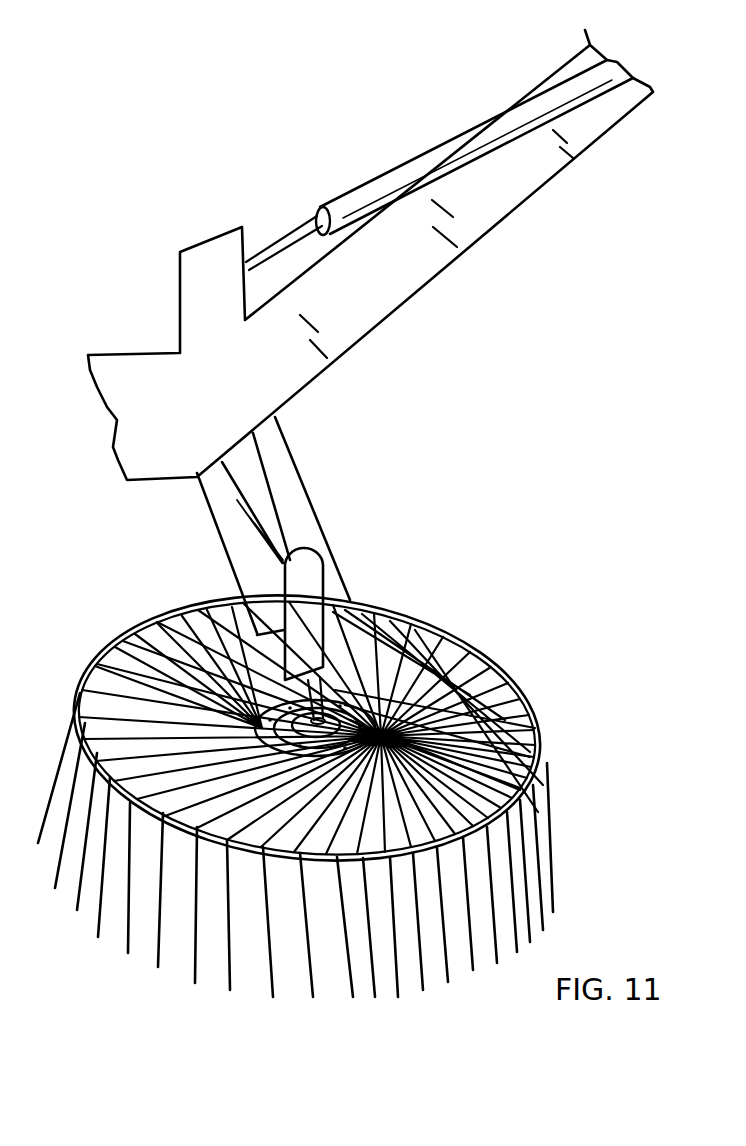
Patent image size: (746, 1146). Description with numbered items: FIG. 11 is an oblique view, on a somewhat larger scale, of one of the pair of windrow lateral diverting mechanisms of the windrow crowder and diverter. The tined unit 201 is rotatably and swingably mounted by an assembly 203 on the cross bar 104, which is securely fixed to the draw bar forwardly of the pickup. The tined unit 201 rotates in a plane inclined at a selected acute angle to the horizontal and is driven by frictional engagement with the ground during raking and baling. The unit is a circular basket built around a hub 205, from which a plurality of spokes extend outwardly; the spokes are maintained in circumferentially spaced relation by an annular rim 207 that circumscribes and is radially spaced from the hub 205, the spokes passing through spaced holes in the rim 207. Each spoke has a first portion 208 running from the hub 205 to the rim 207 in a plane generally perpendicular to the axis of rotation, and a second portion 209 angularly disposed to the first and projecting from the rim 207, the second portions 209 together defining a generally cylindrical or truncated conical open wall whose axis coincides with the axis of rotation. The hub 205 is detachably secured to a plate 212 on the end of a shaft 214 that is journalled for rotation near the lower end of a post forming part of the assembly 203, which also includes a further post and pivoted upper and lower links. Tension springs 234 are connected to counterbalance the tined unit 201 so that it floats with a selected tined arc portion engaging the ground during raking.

The cross bar 104 is at (560, 70).
The assembly 203 is at (420, 469).
The tined unit 201 is at (468, 585).
The tension springs 234 is at (238, 540).
The first portion of spoke 208 is at (440, 643).
The second portion of spoke 209 is at (473, 667).
The shaft 214 is at (493, 690).
The plate 212 is at (520, 731).
The hub 205 is at (523, 807).
The annular rim 207 is at (477, 833).